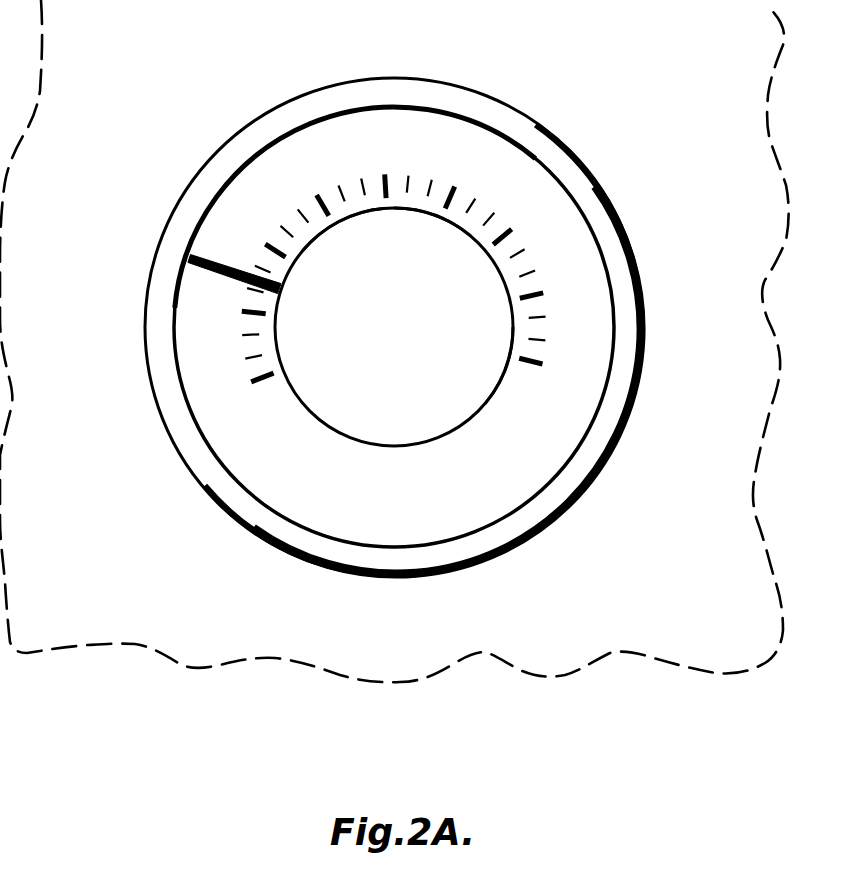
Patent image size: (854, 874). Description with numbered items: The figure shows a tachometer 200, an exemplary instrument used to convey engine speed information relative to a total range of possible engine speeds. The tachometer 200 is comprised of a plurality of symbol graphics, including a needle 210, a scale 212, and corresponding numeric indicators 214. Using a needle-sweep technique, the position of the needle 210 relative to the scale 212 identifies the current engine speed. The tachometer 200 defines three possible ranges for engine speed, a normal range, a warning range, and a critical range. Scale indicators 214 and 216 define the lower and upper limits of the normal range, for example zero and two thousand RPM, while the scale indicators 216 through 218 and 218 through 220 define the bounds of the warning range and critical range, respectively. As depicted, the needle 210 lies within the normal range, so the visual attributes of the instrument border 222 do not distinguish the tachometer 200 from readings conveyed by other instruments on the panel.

The tachometer 200 is at (200, 121).
The needle 210 is at (187, 259).
The scale 212 is at (515, 379).
The numeric indicators 214 is at (280, 369).
The scale indicator 216 is at (387, 209).
The scale indicator 218 is at (438, 212).
The scale indicator 220 is at (511, 364).
The instrument border 222 is at (484, 107).